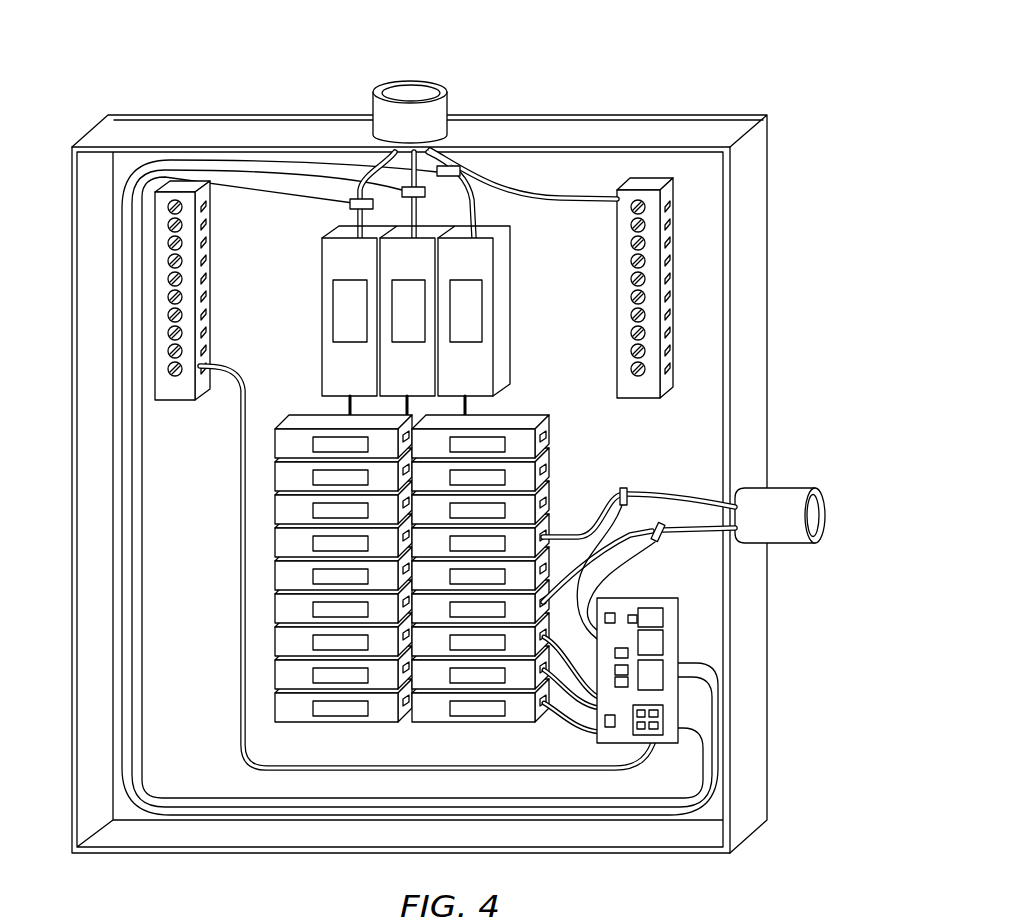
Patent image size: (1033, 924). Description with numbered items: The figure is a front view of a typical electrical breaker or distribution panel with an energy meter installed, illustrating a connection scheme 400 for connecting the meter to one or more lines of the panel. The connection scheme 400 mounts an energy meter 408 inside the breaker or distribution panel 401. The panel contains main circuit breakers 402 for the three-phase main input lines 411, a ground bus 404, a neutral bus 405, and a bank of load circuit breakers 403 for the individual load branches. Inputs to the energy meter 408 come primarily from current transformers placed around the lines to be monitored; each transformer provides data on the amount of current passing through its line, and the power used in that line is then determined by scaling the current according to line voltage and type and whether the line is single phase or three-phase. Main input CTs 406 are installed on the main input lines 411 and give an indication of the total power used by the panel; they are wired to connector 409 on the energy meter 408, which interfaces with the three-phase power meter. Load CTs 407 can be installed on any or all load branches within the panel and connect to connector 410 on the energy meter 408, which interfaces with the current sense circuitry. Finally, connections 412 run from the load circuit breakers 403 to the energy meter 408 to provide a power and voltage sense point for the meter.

The connection scheme 400 is at (697, 52).
The breaker or distribution panel 401 is at (748, 192).
The main circuit breakers 402 is at (510, 325).
The load circuit breakers 403 is at (548, 447).
The ground bus 404 is at (617, 262).
The neutral bus 405 is at (210, 265).
The main input CTs 406 is at (340, 212).
The load CTs 407 is at (638, 479).
The energy meter 408 is at (680, 730).
The connector 409 is at (662, 685).
The connector 410 is at (663, 643).
The main input lines 411 is at (525, 233).
The connections 412 is at (573, 723).